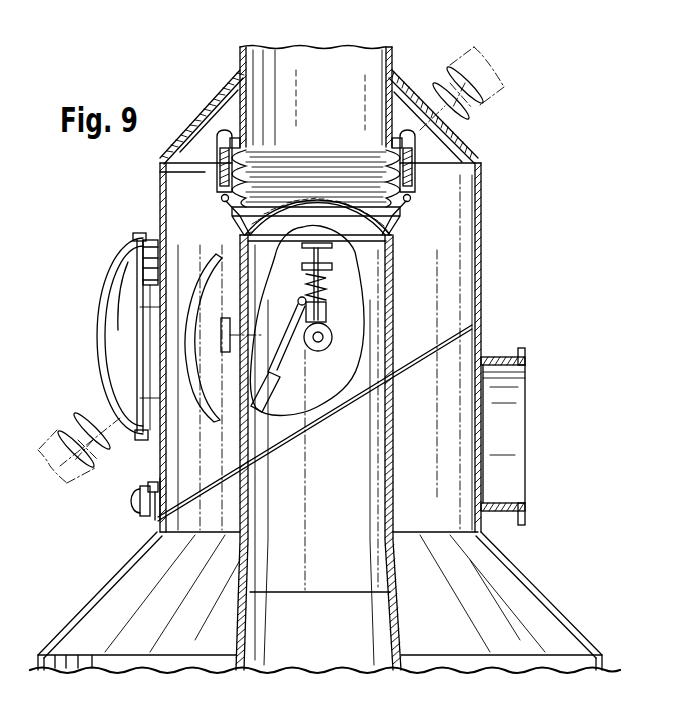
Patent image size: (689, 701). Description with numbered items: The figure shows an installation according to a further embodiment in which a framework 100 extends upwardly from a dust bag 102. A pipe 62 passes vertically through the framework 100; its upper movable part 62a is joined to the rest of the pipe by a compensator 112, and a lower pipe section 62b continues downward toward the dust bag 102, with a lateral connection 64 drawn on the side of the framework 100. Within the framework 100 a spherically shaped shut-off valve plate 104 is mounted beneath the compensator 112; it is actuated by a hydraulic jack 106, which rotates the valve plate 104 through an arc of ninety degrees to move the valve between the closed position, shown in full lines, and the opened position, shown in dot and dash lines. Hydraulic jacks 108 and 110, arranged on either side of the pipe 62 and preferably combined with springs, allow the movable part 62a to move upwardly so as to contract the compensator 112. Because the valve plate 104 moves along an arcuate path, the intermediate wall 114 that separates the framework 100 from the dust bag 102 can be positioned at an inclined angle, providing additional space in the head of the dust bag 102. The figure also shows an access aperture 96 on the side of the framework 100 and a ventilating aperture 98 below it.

The pipe 62 is at (398, 307).
The movable part of the pipe 62a is at (392, 53).
The lower pipe section 62b is at (398, 503).
The connecting flange 64 is at (508, 395).
The access aperture 96 is at (153, 326).
The ventilating aperture 98 is at (157, 515).
The framework 100 is at (468, 238).
The dust bag 102 is at (513, 585).
The valve plate 104 is at (182, 230).
The hydraulic jack 106 is at (276, 388).
The hydraulic jack 108 is at (218, 170).
The hydraulic jack 110 is at (414, 173).
The compensator 112 is at (288, 160).
The intermediate wall 114 is at (448, 340).